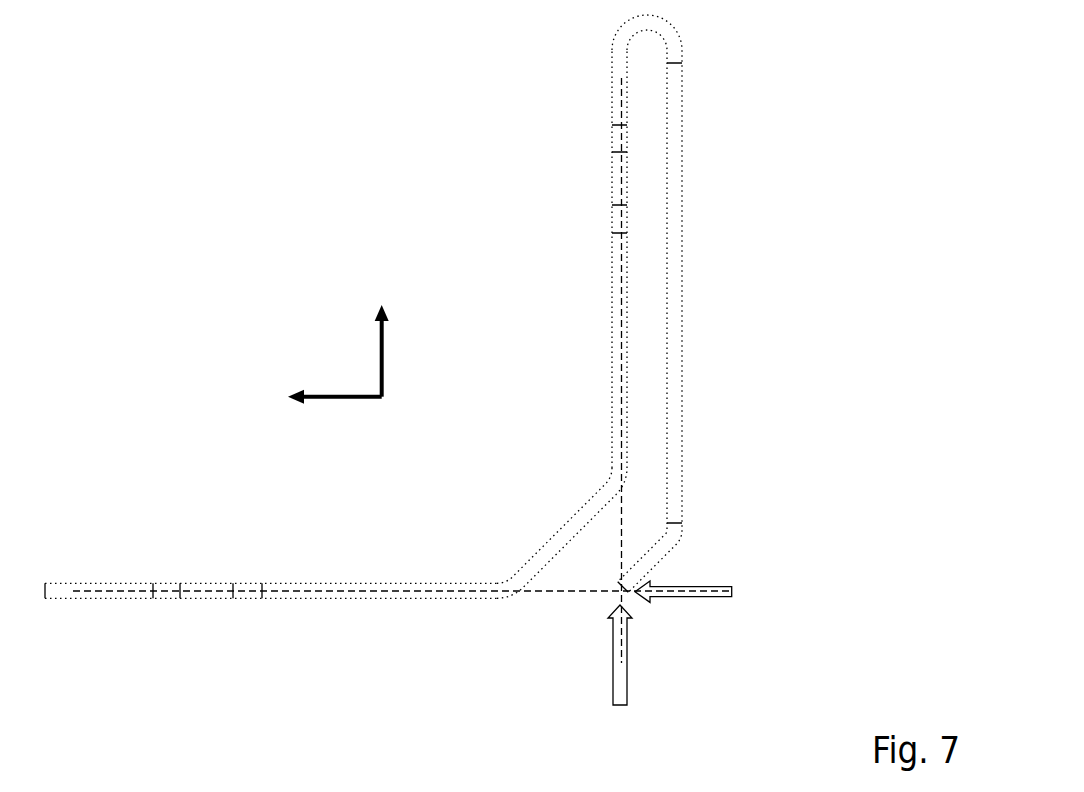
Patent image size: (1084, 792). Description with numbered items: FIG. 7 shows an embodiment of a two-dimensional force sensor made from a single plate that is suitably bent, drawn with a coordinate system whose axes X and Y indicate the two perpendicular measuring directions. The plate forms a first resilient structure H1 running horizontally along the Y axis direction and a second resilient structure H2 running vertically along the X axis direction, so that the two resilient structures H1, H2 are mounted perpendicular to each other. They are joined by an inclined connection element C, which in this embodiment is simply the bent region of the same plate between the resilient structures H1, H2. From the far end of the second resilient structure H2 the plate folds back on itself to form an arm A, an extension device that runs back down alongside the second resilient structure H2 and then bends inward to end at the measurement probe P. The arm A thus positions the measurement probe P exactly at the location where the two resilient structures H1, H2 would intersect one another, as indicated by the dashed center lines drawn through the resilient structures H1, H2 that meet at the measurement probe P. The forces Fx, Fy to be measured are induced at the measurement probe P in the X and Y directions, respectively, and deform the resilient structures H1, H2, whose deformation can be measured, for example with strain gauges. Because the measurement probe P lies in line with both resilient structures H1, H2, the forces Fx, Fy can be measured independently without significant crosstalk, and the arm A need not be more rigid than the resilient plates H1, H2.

The resilient structure H1 is at (337, 591).
The resilient structure H2 is at (622, 305).
The arm A is at (669, 310).
The connection element C is at (577, 527).
The measurement probe P is at (620, 595).
The force in X direction Fx is at (607, 655).
The force in Y direction Fy is at (683, 578).
The X axis X is at (394, 351).
The Y axis Y is at (328, 411).